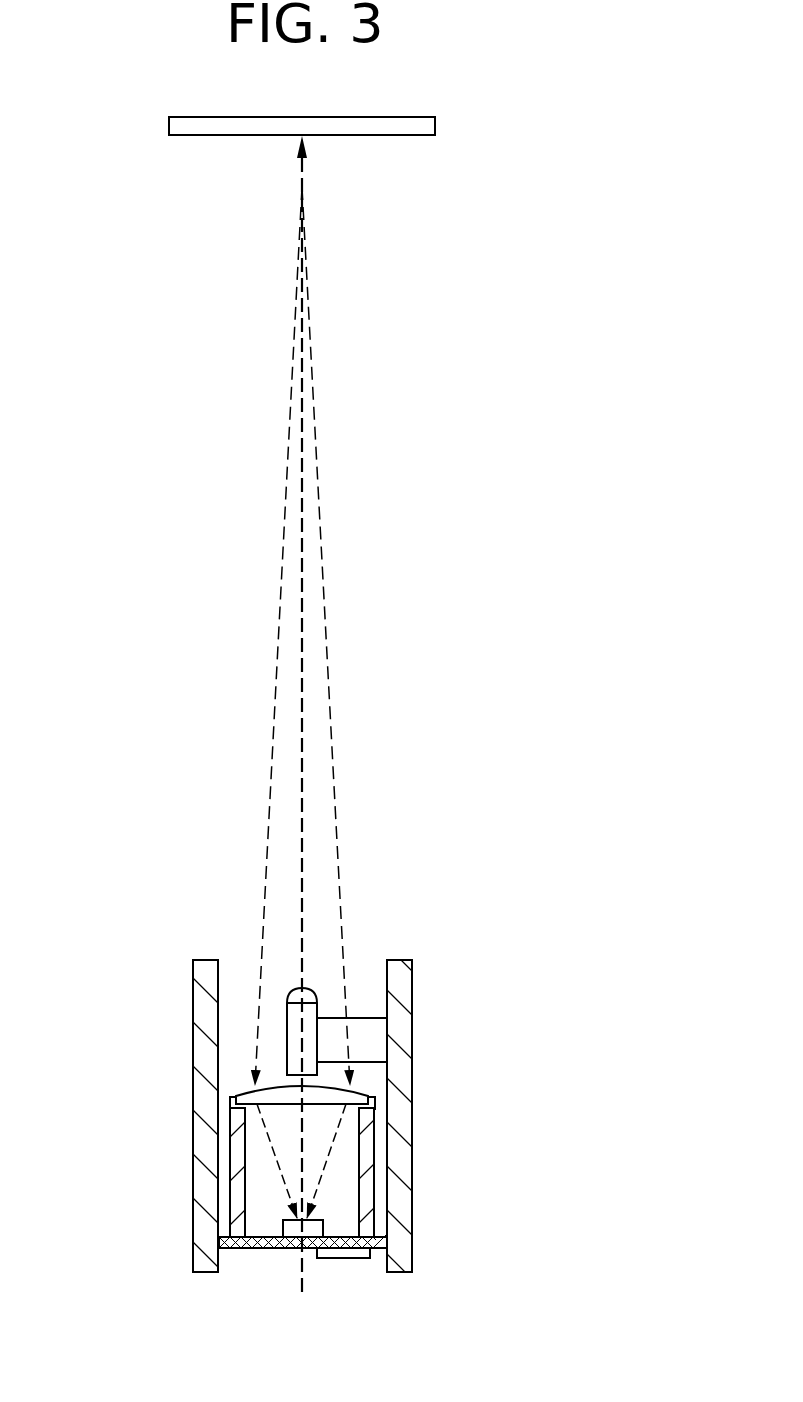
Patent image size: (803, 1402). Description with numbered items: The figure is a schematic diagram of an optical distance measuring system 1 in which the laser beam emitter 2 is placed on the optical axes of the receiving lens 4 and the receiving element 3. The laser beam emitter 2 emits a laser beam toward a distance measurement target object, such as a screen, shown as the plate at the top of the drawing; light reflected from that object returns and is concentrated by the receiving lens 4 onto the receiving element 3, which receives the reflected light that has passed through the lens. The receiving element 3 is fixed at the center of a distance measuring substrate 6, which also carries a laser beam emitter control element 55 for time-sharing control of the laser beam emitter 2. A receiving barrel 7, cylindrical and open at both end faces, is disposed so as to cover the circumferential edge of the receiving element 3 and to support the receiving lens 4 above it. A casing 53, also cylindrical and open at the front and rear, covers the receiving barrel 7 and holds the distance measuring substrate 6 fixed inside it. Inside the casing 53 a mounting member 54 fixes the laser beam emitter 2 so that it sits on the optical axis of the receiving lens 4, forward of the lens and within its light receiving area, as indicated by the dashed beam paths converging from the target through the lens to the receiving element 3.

The distance measuring system 1 is at (135, 908).
The laser beam emitter 2 is at (290, 1028).
The receiving element 3 is at (292, 1249).
The receiving lens 4 is at (232, 1105).
The distance measuring substrate 6 is at (240, 1250).
The receiving barrel 7 is at (240, 1200).
The casing 53 is at (403, 1268).
The mounting member 54 is at (378, 1030).
The laser beam emitter control element 55 is at (345, 1259).